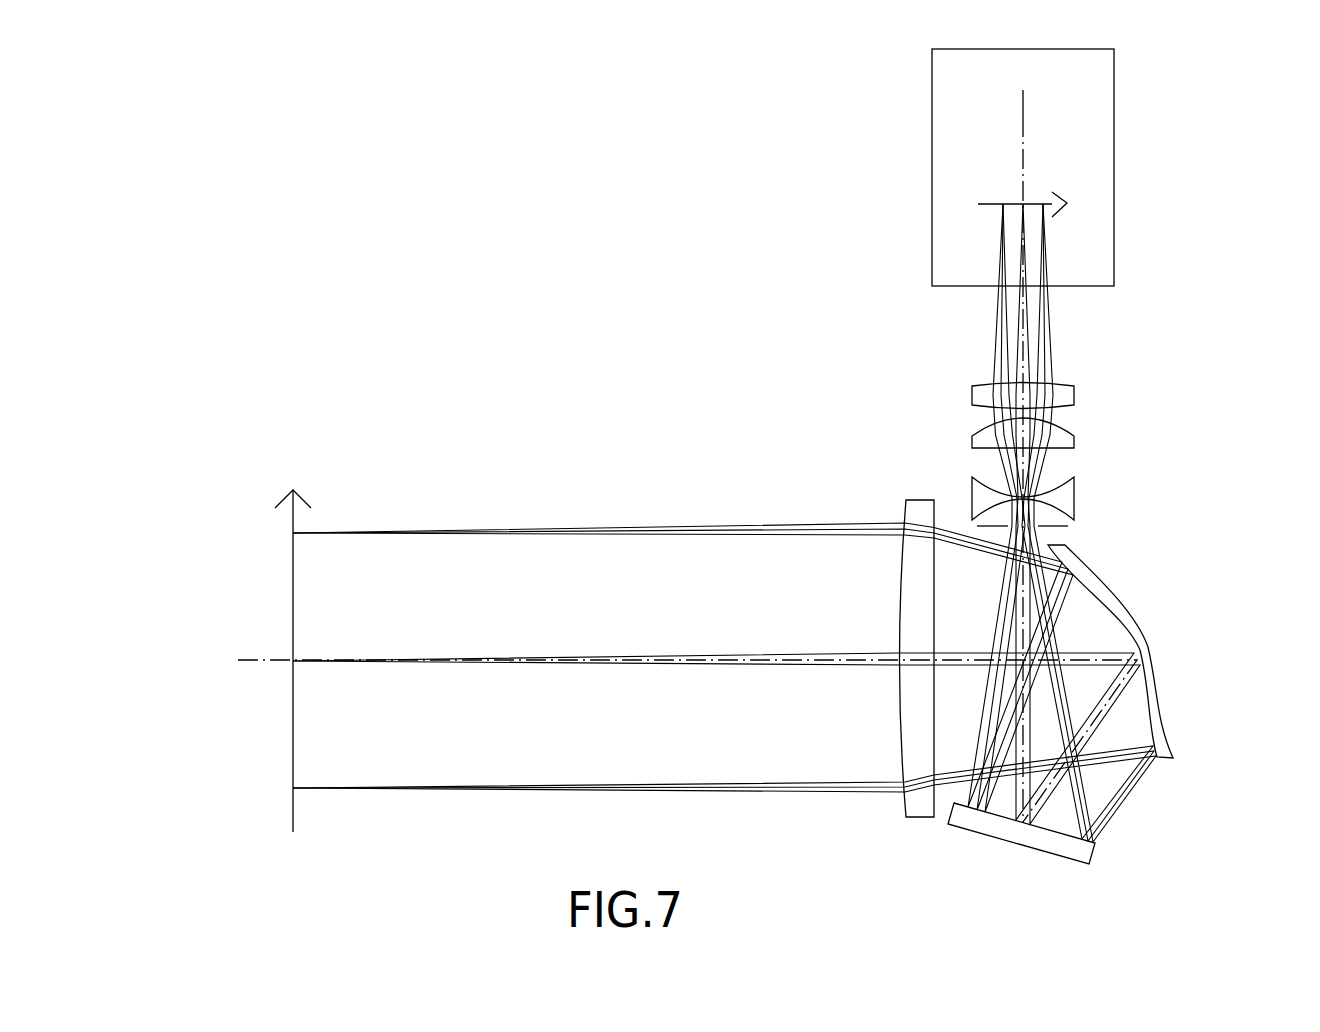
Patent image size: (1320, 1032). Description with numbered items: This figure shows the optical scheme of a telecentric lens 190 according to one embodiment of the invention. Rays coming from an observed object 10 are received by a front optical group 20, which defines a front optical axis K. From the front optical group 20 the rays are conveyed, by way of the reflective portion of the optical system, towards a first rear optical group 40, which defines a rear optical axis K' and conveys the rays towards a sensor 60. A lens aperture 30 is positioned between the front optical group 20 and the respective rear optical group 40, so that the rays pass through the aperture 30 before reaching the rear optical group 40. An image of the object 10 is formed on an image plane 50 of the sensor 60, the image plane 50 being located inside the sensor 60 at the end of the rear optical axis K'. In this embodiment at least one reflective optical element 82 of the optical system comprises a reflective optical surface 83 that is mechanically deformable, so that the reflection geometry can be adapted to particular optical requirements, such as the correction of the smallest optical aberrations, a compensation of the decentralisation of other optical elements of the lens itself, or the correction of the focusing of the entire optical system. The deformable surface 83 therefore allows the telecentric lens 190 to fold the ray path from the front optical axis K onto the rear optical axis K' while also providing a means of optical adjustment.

The observed object 10 is at (293, 718).
The front optical group 20 is at (906, 500).
The lens aperture 30 is at (1068, 526).
The first rear optical group 40 is at (1085, 502).
The image plane 50 is at (985, 204).
The sensor 60 is at (932, 78).
The reflective optical element 82 is at (1163, 720).
The reflective optical surface 83 is at (1120, 610).
The telecentric lens 190 is at (312, 298).
The front optical axis K is at (657, 704).
The rear optical axis K' is at (1135, 449).